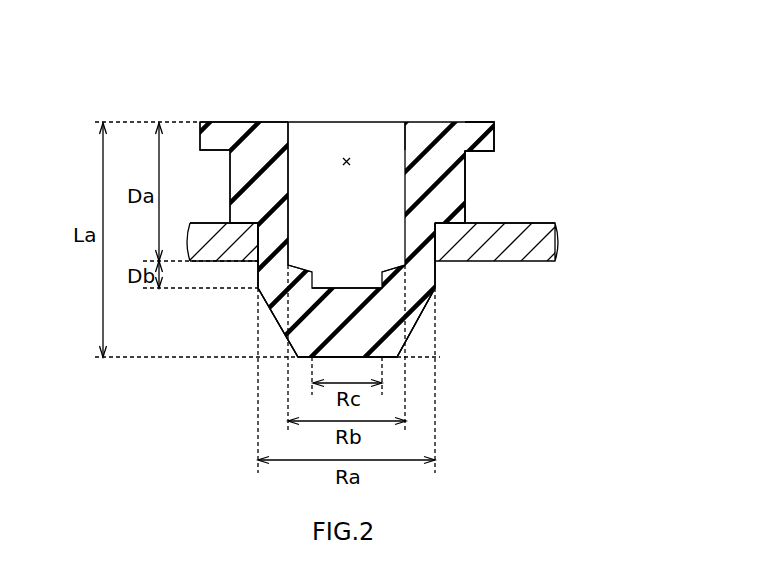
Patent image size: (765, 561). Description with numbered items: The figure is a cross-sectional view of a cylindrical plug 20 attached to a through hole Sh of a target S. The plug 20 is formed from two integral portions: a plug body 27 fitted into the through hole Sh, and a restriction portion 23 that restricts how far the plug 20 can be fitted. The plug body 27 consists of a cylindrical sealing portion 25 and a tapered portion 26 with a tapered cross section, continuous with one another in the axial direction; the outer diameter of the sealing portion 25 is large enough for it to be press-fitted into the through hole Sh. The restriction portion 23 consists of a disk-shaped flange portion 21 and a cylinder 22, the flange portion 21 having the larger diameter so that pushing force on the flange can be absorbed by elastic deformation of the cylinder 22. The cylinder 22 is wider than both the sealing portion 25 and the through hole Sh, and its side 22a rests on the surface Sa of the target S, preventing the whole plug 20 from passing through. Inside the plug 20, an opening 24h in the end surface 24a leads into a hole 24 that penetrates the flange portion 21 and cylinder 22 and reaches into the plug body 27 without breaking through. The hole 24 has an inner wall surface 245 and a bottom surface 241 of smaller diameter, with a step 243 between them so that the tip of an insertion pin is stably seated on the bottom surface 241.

The plug 20 is at (221, 111).
The flange portion 21 is at (473, 135).
The cylinder 22 is at (457, 187).
The side of the cylinder 22a is at (244, 225).
The restriction portion 23 is at (571, 120).
The hole 24 is at (346, 157).
The end surface 24a is at (242, 121).
The opening 24h is at (401, 121).
The bottom surface 241 is at (345, 287).
The step 243 is at (300, 265).
The inner wall surface 245 is at (290, 168).
The sealing portion 25 is at (417, 243).
The tapered portion 26 is at (370, 320).
The plug body 27 is at (516, 287).
The target S is at (552, 248).
The surface of the target Sa is at (543, 222).
The through hole Sh is at (438, 228).